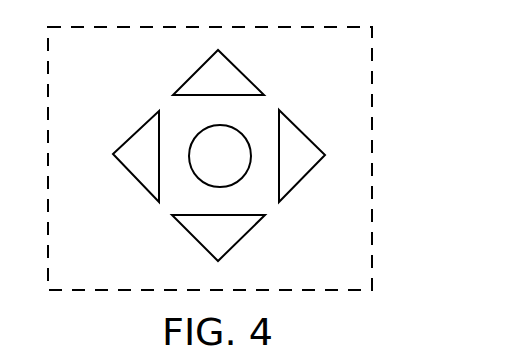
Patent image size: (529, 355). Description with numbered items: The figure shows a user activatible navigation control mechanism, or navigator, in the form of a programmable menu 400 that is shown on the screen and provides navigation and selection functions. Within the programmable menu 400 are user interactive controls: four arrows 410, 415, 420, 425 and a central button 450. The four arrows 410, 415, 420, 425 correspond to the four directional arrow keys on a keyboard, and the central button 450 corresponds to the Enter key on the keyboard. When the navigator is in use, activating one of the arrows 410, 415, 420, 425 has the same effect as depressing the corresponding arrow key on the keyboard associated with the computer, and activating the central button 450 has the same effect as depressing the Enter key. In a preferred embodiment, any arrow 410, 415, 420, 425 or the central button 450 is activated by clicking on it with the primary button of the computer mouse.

The programmable menu 400 is at (388, 69).
The arrow 410 is at (220, 51).
The arrow 415 is at (216, 259).
The arrow 420 is at (128, 137).
The arrow 425 is at (308, 177).
The central button 450 is at (240, 169).